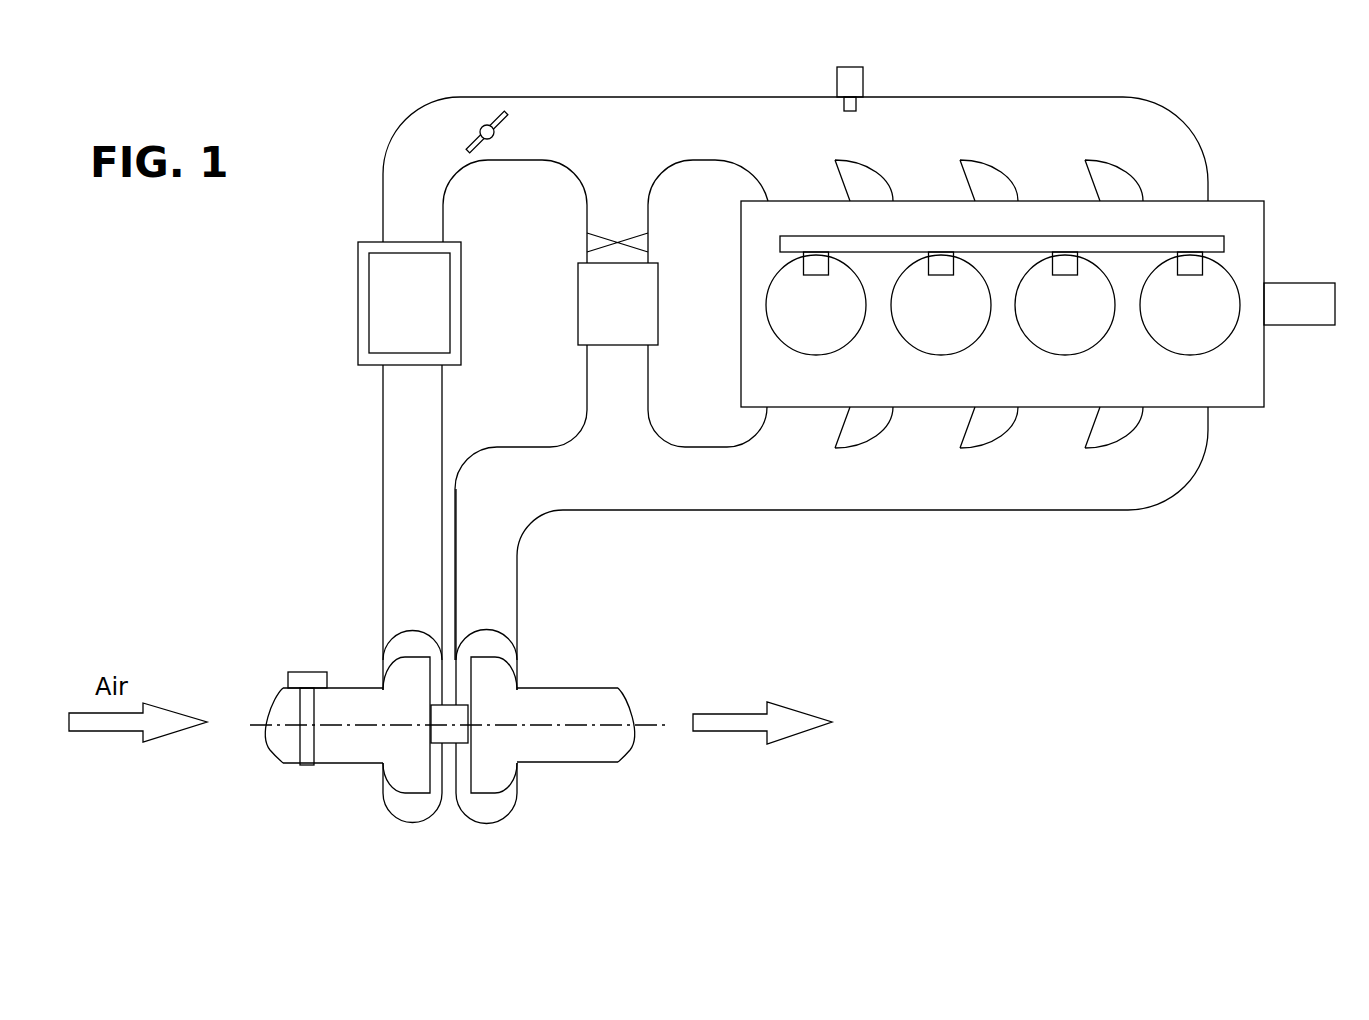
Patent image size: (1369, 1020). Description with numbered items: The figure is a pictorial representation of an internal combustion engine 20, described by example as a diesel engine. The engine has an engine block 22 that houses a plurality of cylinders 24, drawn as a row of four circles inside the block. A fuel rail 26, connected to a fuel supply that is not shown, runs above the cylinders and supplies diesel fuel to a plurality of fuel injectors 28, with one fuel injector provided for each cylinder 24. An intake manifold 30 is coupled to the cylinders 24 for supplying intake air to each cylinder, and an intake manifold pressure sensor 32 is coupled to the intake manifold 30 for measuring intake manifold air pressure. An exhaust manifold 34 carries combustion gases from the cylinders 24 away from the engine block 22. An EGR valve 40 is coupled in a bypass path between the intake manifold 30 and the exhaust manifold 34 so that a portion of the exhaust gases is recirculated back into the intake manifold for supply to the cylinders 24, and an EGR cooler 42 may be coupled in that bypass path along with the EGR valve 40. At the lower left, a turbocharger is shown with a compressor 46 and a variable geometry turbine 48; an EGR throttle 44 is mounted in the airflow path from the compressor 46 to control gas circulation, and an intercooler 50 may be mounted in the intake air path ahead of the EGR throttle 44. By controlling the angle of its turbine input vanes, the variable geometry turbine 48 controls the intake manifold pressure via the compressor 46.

The internal combustion engine 20 is at (747, 93).
The engine block 22 is at (934, 390).
The cylinders 24 is at (803, 342).
The fuel rail 26 is at (1143, 236).
The fuel injectors 28 is at (817, 262).
The intake manifold 30 is at (1082, 97).
The intake manifold pressure sensor 32 is at (864, 82).
The exhaust manifold 34 is at (1060, 512).
The EGR valve 40 is at (603, 237).
The EGR cooler 42 is at (573, 292).
The EGR throttle 44 is at (474, 113).
The compressor 46 is at (403, 757).
The variable geometry turbine 48 is at (490, 757).
The intercooler 50 is at (354, 307).